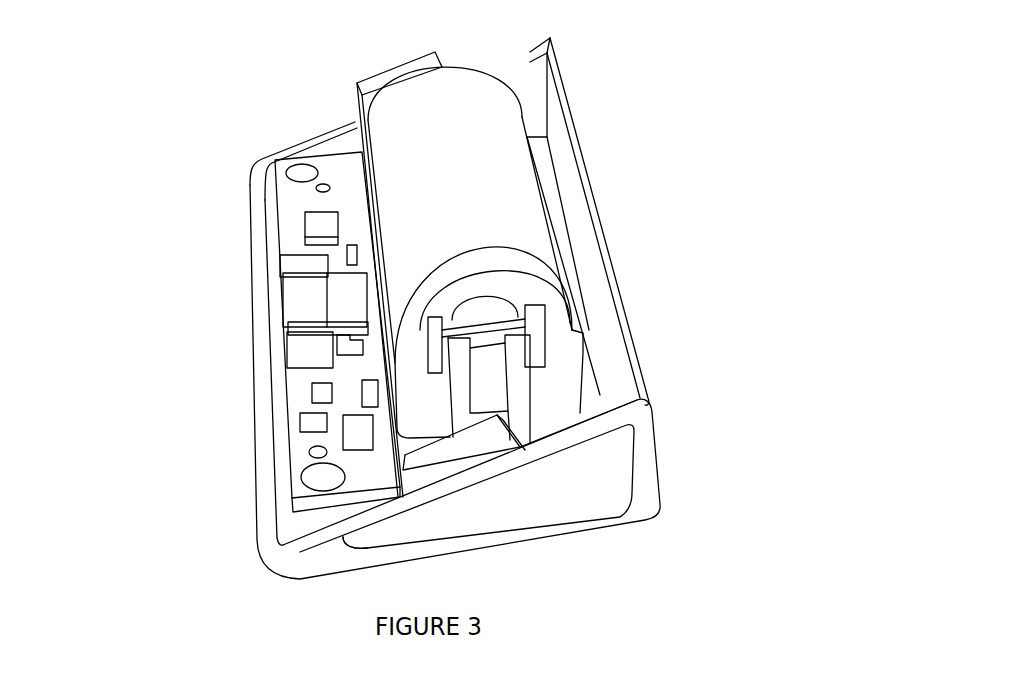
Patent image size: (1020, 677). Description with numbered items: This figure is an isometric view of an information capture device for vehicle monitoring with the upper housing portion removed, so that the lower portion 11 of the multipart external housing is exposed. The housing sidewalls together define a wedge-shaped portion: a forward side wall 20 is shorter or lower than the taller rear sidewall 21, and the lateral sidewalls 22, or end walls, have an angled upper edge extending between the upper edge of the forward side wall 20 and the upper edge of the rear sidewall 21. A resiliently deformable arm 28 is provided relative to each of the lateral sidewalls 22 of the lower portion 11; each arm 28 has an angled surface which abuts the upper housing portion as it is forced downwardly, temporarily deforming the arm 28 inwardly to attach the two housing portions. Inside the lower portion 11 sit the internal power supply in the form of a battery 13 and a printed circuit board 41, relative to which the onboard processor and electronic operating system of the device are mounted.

The lower portion 11 is at (192, 173).
The battery 13 is at (485, 147).
The forward side wall 20 is at (252, 403).
The rear sidewall 21 is at (625, 298).
The lateral sidewalls 22 is at (555, 488).
The resiliently deformable arm 28 is at (355, 97).
The printed circuit board 41 is at (305, 268).